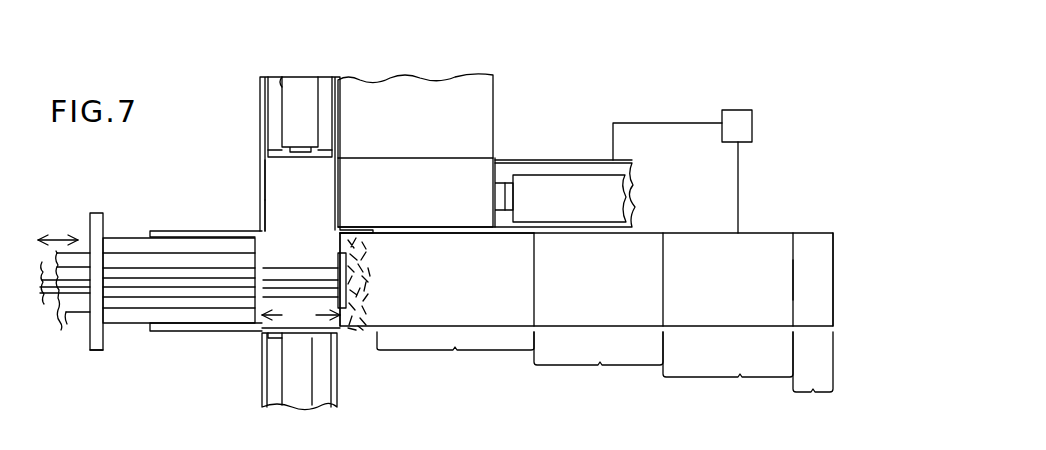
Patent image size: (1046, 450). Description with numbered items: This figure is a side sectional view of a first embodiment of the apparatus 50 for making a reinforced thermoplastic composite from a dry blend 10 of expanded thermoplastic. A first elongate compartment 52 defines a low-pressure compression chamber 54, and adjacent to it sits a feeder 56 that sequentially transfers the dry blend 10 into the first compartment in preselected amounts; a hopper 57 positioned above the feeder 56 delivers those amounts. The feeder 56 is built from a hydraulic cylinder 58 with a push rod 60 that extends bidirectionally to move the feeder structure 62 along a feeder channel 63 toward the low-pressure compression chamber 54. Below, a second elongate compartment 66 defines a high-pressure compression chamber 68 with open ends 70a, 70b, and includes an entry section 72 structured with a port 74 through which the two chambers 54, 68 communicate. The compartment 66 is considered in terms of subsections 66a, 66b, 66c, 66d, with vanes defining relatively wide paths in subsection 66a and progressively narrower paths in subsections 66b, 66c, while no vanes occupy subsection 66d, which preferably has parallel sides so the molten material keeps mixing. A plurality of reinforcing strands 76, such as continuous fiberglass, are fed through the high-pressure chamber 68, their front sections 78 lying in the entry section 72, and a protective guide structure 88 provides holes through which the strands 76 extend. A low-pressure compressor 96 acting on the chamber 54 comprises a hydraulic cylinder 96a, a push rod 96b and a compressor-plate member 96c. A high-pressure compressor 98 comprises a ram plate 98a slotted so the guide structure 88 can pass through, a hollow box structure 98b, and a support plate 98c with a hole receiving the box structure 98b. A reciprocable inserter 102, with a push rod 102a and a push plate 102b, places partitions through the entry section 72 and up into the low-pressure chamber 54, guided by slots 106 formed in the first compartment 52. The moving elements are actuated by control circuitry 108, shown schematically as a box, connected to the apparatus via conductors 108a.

The dry blend 10 is at (372, 280).
The apparatus 50 is at (775, 200).
The first elongate compartment 52 is at (260, 98).
The low-pressure compression chamber 54 is at (288, 193).
The feeder 56 is at (542, 158).
The hopper 57 is at (493, 90).
The hydraulic cylinder 58 is at (569, 198).
The push rod 60 is at (503, 182).
The feeder structure 62 is at (495, 183).
The feeder channel 63 is at (415, 192).
The second elongate compartment 66 is at (782, 233).
The subsection 66a is at (455, 360).
The subsection 66b is at (598, 367).
The subsection 66c is at (728, 377).
The subsection 66d is at (817, 380).
The high-pressure compression chamber 68 is at (773, 297).
The open end 70a is at (335, 342).
The open end 70b is at (833, 268).
The entry section 72 is at (301, 315).
The port 74 is at (285, 232).
The reinforcing strands 76 is at (51, 300).
The front sections 78 is at (310, 276).
The protective guide structure 88 is at (82, 310).
The low-pressure compressor 96 is at (323, 86).
The hydraulic cylinder 96a is at (281, 82).
The push rod 96b is at (288, 147).
The compressor-plate member 96c is at (328, 145).
The high-pressure compressor 98 is at (127, 230).
The ram plate 98a is at (267, 246).
The hollow box structure 98b is at (127, 333).
The support plate 98c is at (100, 352).
The reciprocable inserter 102 is at (340, 372).
The push rod 102a is at (312, 392).
The push plate 102b is at (280, 336).
The slots 106 is at (338, 253).
The control circuitry 108 is at (752, 125).
The conductors 108a is at (675, 123).